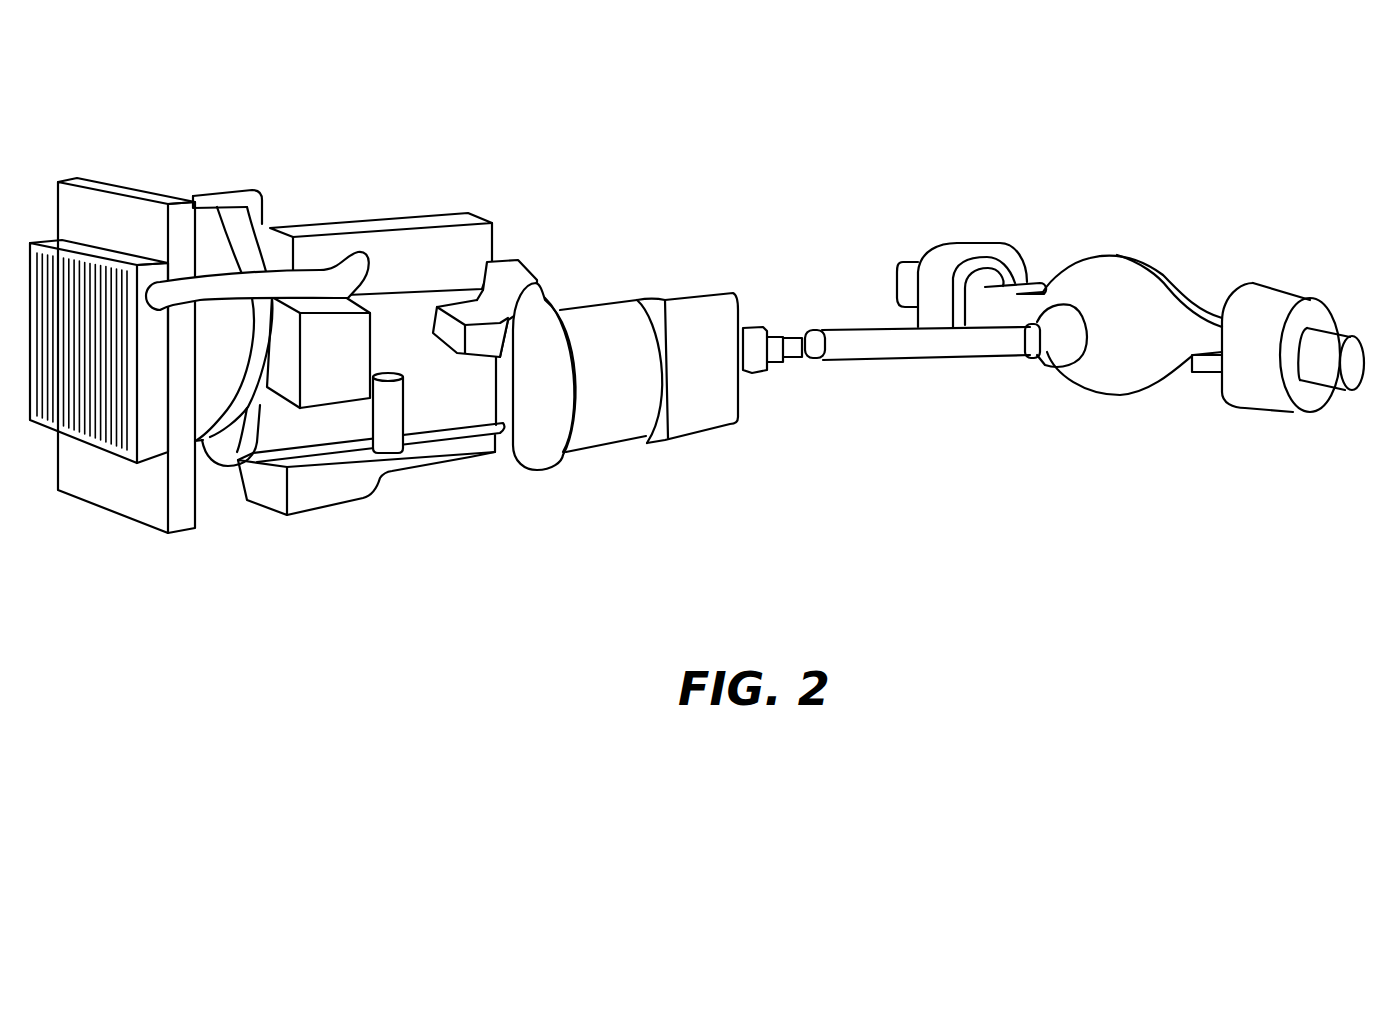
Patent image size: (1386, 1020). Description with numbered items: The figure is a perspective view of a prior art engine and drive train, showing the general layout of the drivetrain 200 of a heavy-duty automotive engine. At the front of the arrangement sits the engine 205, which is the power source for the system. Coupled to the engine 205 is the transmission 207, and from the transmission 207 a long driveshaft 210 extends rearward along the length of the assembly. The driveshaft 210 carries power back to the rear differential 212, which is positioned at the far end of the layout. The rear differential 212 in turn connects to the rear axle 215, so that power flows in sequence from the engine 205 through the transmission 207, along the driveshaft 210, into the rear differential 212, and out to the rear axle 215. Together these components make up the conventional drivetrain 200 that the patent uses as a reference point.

The drivetrain 200 is at (697, 284).
The engine 205 is at (390, 232).
The transmission 207 is at (675, 300).
The driveshaft 210 is at (922, 353).
The rear differential 212 is at (1157, 262).
The rear axle 215 is at (1198, 342).